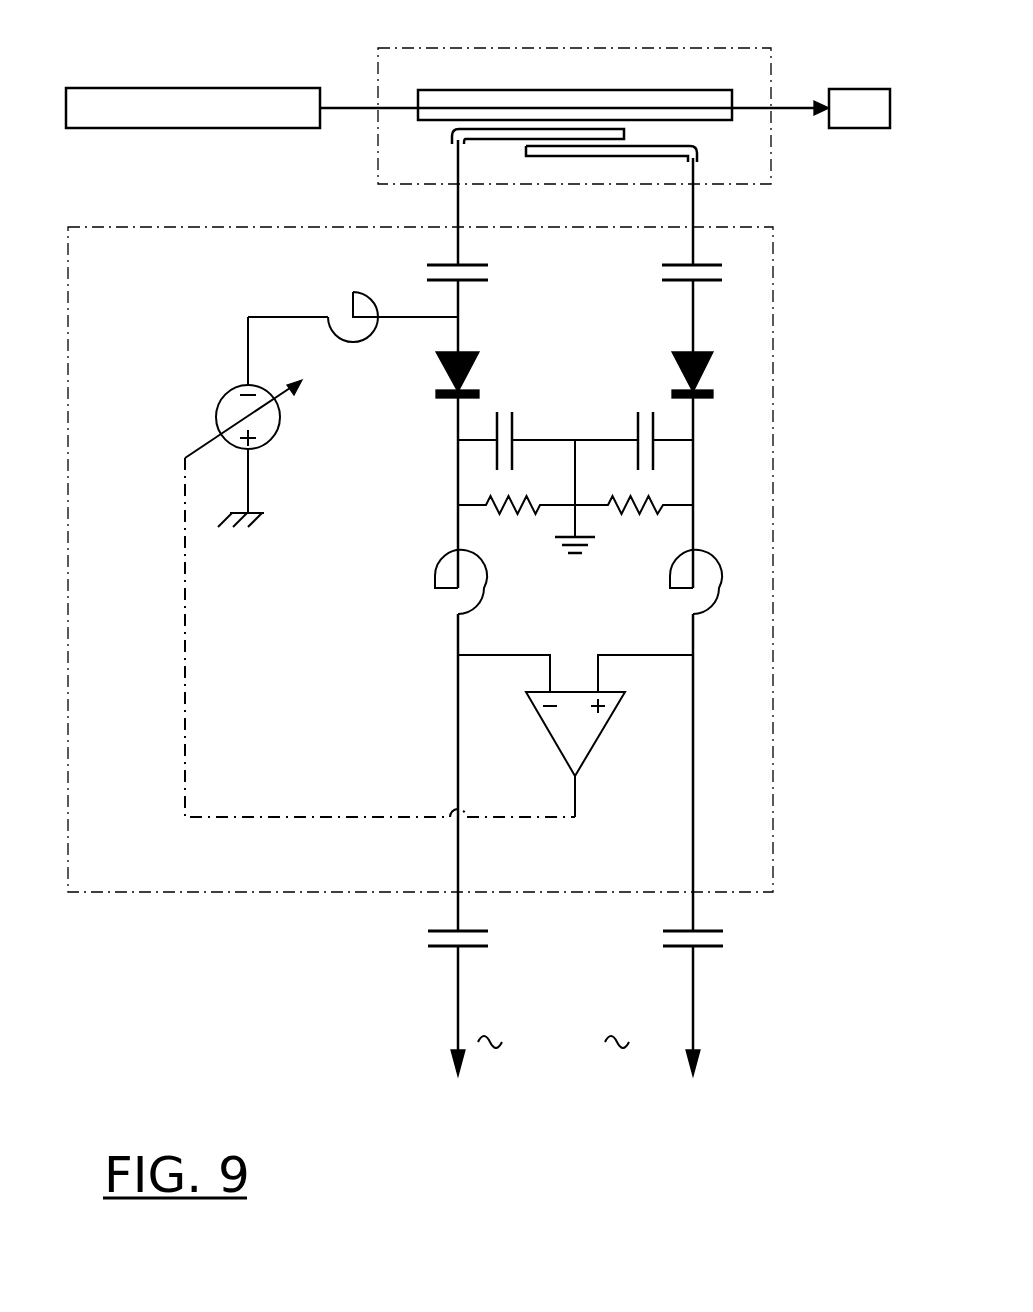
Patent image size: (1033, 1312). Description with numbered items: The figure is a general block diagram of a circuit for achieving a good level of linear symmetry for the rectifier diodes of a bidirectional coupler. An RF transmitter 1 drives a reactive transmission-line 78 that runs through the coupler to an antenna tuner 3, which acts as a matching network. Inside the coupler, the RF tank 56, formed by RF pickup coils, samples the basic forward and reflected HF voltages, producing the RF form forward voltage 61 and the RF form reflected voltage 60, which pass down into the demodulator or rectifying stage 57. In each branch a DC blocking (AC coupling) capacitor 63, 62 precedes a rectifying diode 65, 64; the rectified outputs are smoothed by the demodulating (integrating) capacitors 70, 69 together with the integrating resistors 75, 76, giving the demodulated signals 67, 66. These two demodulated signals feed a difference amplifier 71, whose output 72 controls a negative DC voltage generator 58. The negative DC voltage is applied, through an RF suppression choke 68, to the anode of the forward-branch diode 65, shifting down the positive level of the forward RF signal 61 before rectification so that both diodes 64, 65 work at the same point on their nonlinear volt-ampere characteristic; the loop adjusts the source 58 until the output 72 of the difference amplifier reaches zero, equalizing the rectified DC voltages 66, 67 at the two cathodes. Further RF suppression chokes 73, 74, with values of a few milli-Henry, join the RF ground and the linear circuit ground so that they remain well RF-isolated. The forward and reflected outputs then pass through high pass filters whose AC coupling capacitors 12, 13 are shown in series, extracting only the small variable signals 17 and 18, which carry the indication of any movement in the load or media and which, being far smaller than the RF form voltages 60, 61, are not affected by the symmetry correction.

The RF transmitter 1 is at (213, 88).
The antenna tuner 3 is at (859, 108).
The AC coupling capacitor 12 is at (445, 946).
The AC coupling capacitor 13 is at (710, 948).
The variable VF signal 17 is at (458, 1028).
The variable VR signal 18 is at (693, 1028).
The RF tank 56 is at (488, 48).
The demodulator stage 57 is at (137, 228).
The negative DC voltage generator 58 is at (223, 395).
The RF form forward voltage 60 is at (693, 205).
The RF form reflected voltage 61 is at (458, 207).
The DC blocking capacitor 62 is at (700, 280).
The DC blocking capacitor 63 is at (477, 265).
The rectifying diode 64 is at (672, 352).
The rectifying diode 65 is at (477, 352).
The demodulated signal 66 is at (693, 655).
The demodulated signal 67 is at (458, 655).
The RF suppression choke 68 is at (350, 298).
The demodulating capacitor 69 is at (638, 420).
The demodulating capacitor 70 is at (512, 420).
The difference amplifier 71 is at (600, 742).
The output of difference amplifier 72 is at (342, 815).
The RF suppression choke 73 is at (432, 572).
The RF suppression choke 74 is at (719, 580).
The integrating resistor 75 is at (507, 522).
The integrating resistor 76 is at (646, 522).
The reactive transmission-line 78 is at (342, 108).